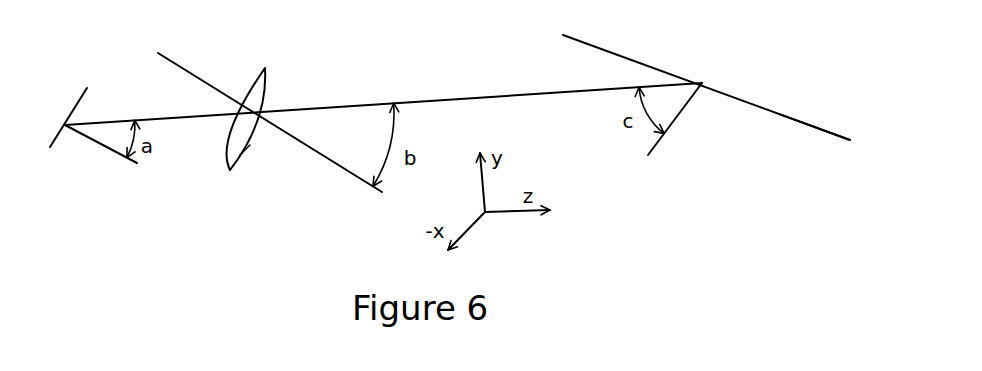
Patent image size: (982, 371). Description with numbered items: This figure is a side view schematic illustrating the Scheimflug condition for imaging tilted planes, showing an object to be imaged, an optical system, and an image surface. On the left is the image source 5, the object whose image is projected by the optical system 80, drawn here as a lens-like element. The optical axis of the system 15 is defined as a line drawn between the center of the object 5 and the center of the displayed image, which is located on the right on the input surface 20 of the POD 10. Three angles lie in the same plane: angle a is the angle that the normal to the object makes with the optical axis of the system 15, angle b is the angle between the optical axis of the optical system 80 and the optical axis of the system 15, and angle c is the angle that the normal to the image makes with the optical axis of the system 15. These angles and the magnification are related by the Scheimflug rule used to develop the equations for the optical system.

The image source 5 is at (80, 97).
The optical axis of the system 15 is at (472, 98).
The optical system 80 is at (254, 78).
The POD 10 is at (835, 135).
The input surface 20 is at (807, 125).